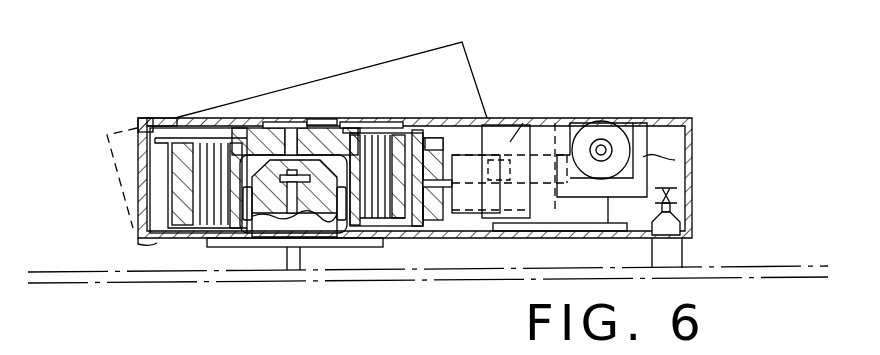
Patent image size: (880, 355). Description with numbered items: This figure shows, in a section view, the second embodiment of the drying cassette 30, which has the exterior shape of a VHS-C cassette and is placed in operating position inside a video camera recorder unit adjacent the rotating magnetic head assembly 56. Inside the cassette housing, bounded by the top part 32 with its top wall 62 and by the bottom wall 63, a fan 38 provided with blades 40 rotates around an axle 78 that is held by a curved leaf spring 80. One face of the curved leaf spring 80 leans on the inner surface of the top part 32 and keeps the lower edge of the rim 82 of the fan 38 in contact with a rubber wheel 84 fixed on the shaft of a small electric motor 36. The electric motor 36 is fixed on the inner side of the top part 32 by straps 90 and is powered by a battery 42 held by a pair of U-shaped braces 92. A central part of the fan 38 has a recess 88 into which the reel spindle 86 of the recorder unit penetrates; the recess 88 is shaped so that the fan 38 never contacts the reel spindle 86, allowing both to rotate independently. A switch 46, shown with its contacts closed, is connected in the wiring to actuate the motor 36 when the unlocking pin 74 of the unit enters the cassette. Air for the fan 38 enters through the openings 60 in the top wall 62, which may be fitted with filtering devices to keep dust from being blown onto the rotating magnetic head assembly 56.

The drying cassette 30 is at (735, 116).
The top part of the cassette housing 32 is at (138, 117).
The electric motor 36 is at (555, 172).
The fan 38 is at (334, 143).
The blades 40 is at (397, 132).
The battery 42 is at (620, 138).
The switch 46 is at (670, 183).
The rotating magnetic head assembly 56 is at (302, 82).
The openings 60 is at (200, 118).
The top wall 62 is at (158, 118).
The bottom wall 63 is at (157, 242).
The unlocking pin 74 is at (672, 252).
The axle 78 is at (284, 118).
The curved leaf spring 80 is at (323, 118).
The rim 82 is at (443, 115).
The rubber wheel 84 is at (502, 172).
The reel spindle 86 is at (265, 228).
The recess 88 is at (240, 163).
The straps 90 is at (542, 173).
The U-shaped braces 92 is at (675, 160).